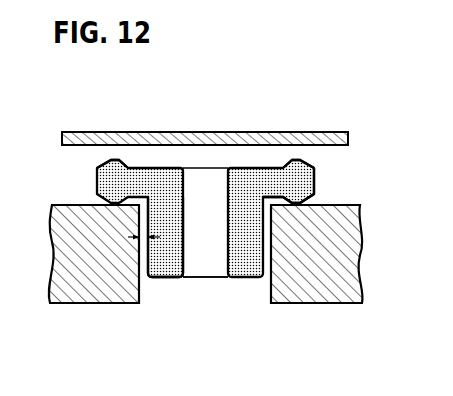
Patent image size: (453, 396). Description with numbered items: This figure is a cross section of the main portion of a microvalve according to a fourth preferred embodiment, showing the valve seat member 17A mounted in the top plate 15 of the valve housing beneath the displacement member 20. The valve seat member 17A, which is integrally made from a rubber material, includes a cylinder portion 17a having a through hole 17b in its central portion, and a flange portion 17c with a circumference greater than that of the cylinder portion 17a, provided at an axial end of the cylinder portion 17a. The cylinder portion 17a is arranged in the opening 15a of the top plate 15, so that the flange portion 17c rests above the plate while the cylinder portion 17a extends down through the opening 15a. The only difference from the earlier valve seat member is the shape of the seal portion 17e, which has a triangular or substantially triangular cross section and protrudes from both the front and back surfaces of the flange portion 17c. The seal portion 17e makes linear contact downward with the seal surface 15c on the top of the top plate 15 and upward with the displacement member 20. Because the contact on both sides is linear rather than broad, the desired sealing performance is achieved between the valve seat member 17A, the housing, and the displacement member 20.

The displacement member 20 is at (87, 132).
The valve seat member 17A is at (183, 166).
The seal portion 17e is at (116, 160).
The flange portion 17c is at (262, 175).
The cylinder portion 17a is at (167, 276).
The through hole 17b is at (216, 262).
The top plate 15 is at (347, 247).
The seal surface 15c is at (77, 204).
The opening 15a is at (267, 304).